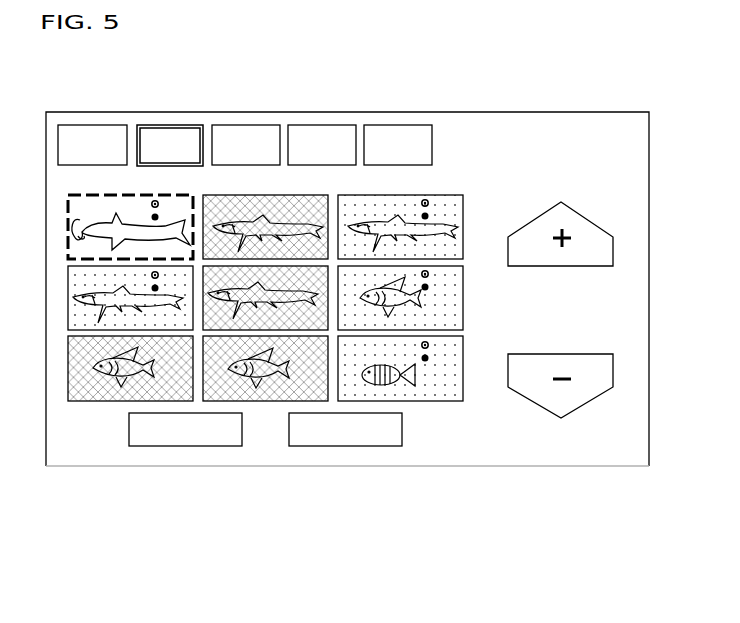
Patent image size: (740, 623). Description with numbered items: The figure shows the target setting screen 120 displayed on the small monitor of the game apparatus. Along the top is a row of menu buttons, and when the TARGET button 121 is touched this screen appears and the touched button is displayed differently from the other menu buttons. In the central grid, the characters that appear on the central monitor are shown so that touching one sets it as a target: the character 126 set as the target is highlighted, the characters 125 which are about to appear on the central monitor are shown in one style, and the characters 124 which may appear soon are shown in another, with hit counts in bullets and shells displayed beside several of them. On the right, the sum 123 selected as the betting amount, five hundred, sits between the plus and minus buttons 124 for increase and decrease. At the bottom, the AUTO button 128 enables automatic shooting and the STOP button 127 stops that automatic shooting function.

The target setting screen 120 is at (611, 112).
The TARGET button 121 is at (185, 125).
The sum selected as the betting amount 123 is at (608, 320).
The characters which may appear on the central monitor 124 is at (353, 300).
The characters which are about to appear on the central monitor 125 is at (400, 205).
The character set as the target 126 is at (135, 205).
The STOP button 127 is at (318, 438).
The AUTO button 128 is at (217, 438).